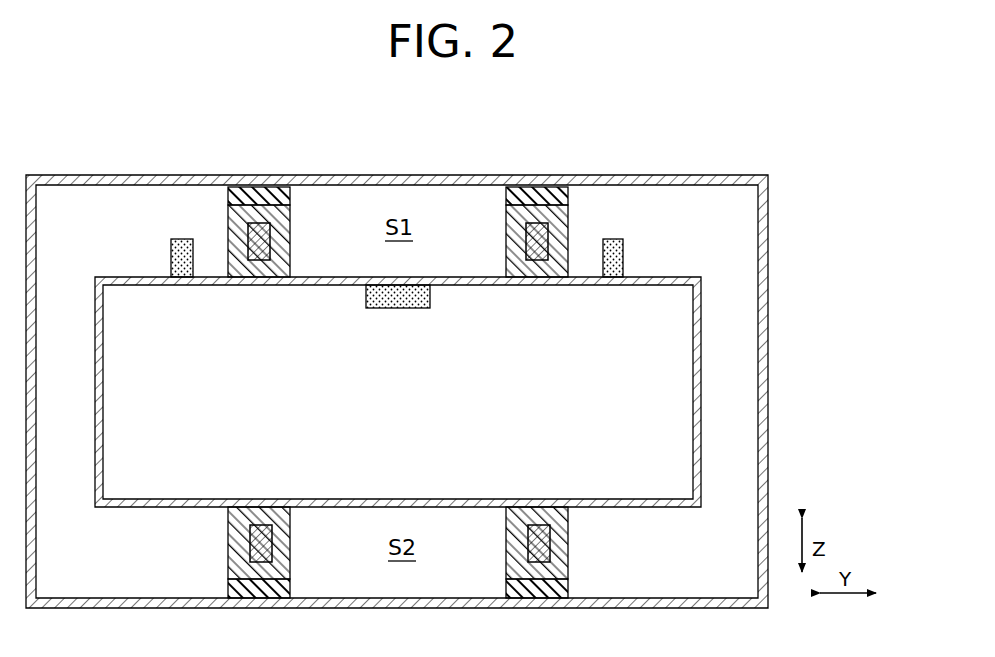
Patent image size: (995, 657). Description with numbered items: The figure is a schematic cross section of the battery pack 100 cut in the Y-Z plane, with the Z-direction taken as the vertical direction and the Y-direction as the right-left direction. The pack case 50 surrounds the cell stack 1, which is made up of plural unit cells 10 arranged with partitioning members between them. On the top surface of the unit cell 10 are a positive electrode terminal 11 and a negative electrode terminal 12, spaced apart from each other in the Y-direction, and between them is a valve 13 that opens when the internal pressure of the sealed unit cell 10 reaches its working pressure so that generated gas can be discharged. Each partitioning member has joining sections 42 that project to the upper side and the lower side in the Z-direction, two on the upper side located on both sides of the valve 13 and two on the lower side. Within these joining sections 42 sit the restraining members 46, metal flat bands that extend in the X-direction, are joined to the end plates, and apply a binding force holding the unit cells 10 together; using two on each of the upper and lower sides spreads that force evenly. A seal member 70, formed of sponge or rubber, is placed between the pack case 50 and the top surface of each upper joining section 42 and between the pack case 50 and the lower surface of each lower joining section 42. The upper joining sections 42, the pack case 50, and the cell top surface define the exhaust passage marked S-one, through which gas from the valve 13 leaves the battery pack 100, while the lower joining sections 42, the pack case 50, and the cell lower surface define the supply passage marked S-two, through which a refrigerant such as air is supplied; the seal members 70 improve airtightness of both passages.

The battery pack 100 is at (88, 160).
The pack case 50 is at (768, 225).
The cell stack 1 is at (695, 268).
The unit cell 10 is at (413, 397).
The positive electrode terminal 11 is at (180, 258).
The negative electrode terminal 12 is at (614, 256).
The valve 13 is at (372, 298).
The joining section 42 is at (282, 222).
The restraining member 46 is at (268, 248).
The seal member 70 is at (292, 200).